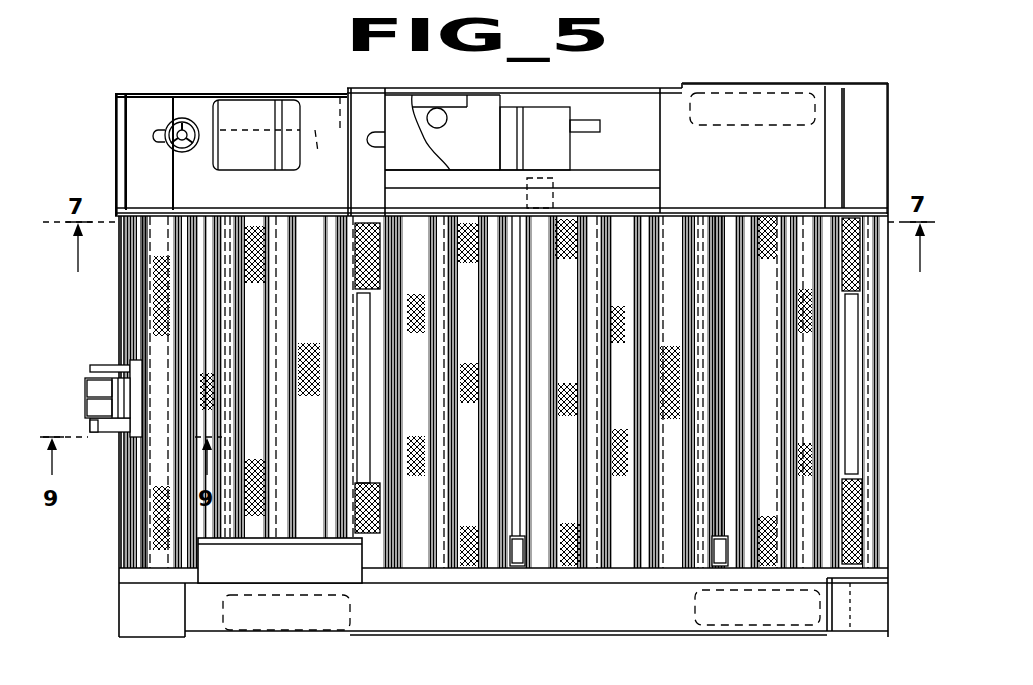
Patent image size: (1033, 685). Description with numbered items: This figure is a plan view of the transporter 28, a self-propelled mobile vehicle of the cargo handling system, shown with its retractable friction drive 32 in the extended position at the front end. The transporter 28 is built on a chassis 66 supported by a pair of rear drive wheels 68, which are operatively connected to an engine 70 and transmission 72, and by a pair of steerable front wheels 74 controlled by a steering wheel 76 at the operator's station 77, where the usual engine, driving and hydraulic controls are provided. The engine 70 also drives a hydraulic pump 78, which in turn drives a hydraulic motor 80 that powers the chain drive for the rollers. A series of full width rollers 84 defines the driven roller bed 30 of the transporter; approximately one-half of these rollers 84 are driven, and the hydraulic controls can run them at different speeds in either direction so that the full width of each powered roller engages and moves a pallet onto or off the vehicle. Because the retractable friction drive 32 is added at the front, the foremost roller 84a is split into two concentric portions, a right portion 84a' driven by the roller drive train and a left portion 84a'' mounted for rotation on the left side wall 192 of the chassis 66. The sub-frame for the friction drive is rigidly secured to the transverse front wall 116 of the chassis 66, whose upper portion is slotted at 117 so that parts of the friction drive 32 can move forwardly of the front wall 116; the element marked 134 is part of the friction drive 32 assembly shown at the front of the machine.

The transporter 28 is at (806, 61).
The driven roller bed 30 is at (872, 388).
The retractable friction drive 32 is at (78, 384).
The chassis 66 is at (112, 136).
The rear drive wheels 68 is at (790, 128).
The engine 70 is at (402, 105).
The transmission 72 is at (545, 112).
The steerable front wheels 74 is at (293, 645).
The steering wheel 76 is at (190, 155).
The operator's station 77 is at (259, 100).
The hydraulic pump 78 is at (598, 130).
The hydraulic motor 80 is at (556, 200).
The full width rollers 84 is at (232, 228).
The front roller 84a is at (97, 395).
The right roller portion 84a' is at (104, 303).
The left roller portion 84a'' is at (104, 479).
The transverse front wall 116 is at (124, 352).
The slot 117 is at (130, 368).
The feed pawl 134 is at (86, 397).
The left side wall 192 is at (440, 584).